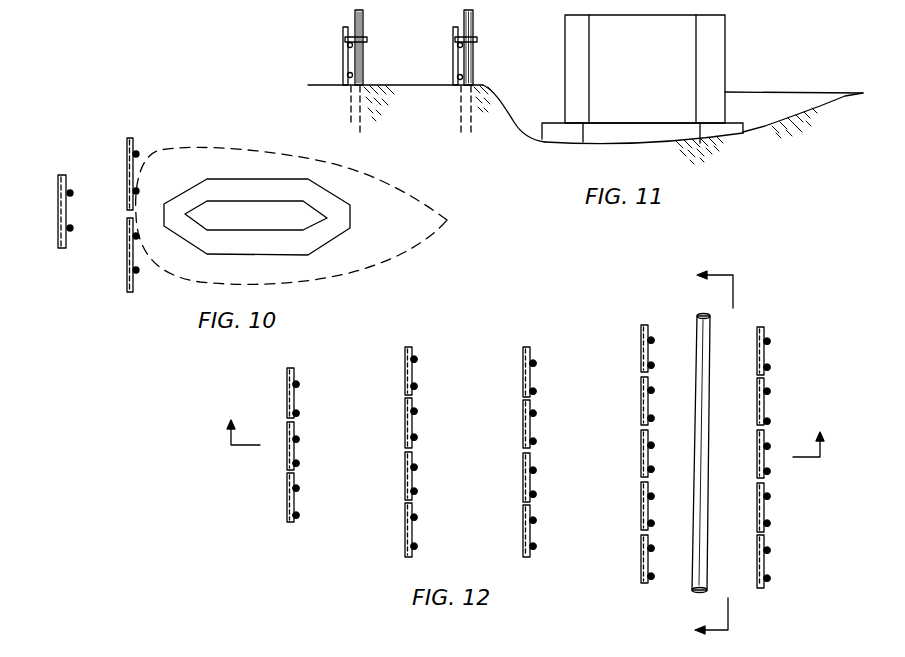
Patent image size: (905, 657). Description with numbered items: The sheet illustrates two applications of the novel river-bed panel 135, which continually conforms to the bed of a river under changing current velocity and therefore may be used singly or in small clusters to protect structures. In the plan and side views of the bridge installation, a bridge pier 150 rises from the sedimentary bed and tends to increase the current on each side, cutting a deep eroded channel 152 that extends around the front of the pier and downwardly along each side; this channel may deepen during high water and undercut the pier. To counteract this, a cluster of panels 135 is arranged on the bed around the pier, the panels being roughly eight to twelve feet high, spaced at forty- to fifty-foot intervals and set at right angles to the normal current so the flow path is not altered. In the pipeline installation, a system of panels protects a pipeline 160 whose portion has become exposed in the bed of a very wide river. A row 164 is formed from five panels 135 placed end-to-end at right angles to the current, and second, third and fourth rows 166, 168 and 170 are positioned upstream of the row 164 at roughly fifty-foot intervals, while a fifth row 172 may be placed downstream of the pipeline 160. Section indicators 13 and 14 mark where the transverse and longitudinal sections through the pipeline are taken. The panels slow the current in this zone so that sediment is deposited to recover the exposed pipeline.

In FIG. 11, the panel 135 is at (344, 48).
In FIG. 10, the panel 135 is at (59, 190).
In FIG. 11, the bridge pier 150 is at (655, 77).
In FIG. 10, the bridge pier 150 is at (303, 225).
In FIG. 11, the eroded channel 152 is at (516, 116).
In FIG. 10, the eroded channel 152 is at (340, 272).
In FIG. 12, the pipeline 160 is at (702, 465).
In FIG. 12, the row 164 is at (646, 324).
In FIG. 12, the second row 166 is at (527, 346).
In FIG. 12, the third row 168 is at (407, 346).
In FIG. 12, the fourth row 170 is at (289, 367).
In FIG. 12, the fifth row 172 is at (761, 327).
In FIG. 12, the section line 13 is at (524, 430).
In FIG. 12, the section line 14 is at (701, 456).